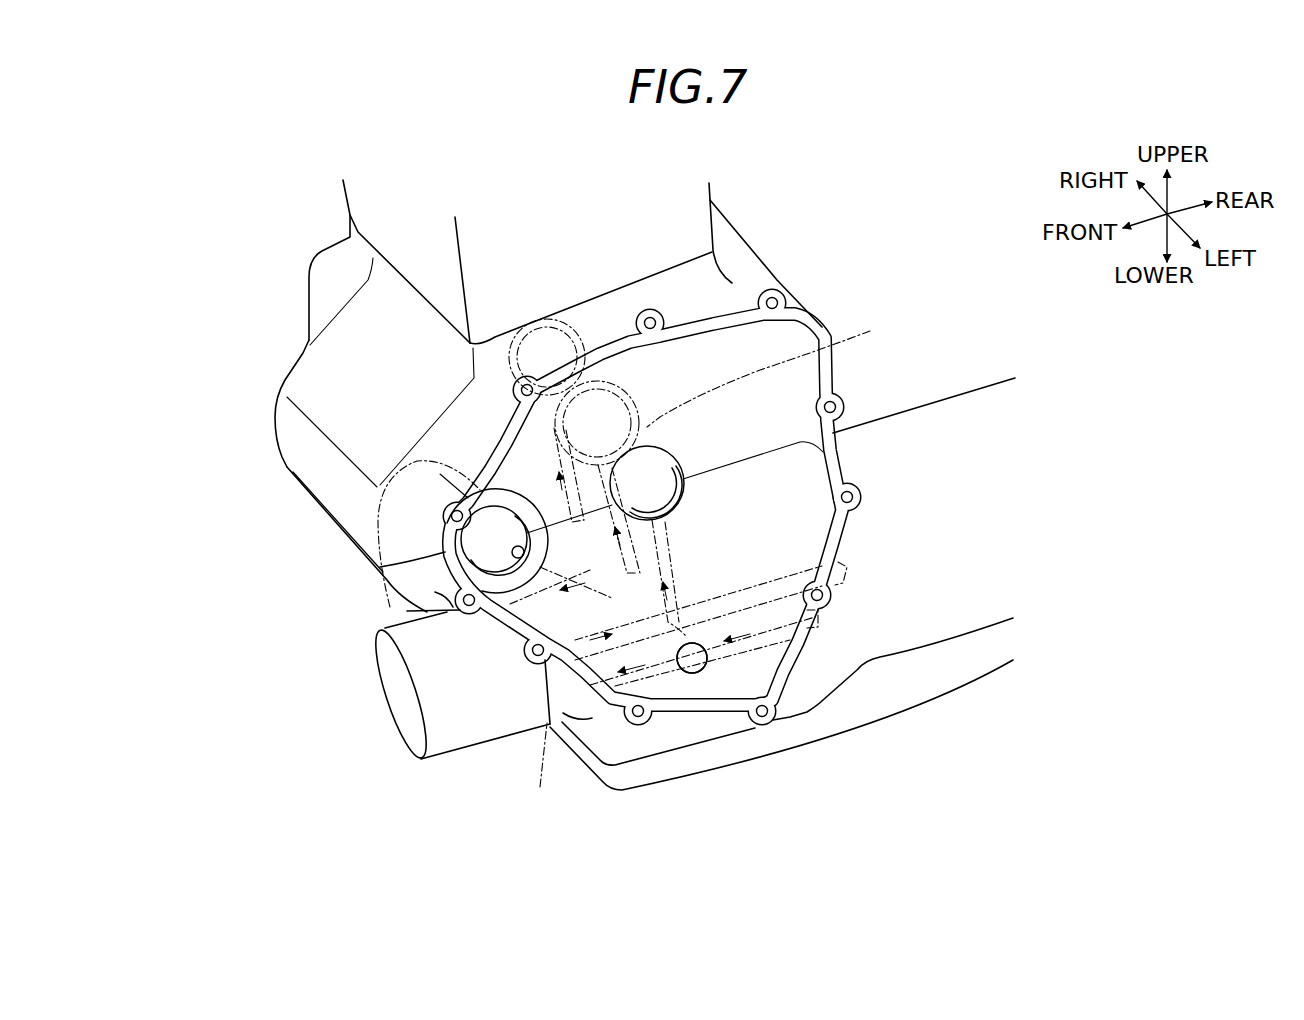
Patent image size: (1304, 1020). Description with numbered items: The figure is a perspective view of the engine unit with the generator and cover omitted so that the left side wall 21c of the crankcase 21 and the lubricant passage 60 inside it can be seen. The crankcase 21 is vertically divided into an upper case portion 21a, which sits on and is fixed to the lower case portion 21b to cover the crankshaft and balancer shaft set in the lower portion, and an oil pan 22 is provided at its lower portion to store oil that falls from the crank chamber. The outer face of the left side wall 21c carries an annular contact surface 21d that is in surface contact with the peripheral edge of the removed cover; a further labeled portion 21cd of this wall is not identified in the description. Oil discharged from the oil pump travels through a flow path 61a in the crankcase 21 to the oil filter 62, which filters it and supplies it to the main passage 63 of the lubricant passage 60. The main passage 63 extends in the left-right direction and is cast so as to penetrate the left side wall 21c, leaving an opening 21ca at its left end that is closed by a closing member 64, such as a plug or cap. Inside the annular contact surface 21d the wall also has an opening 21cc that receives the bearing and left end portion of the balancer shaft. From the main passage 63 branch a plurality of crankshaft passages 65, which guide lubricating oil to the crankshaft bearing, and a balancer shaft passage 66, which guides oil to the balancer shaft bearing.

The crankcase 21 is at (278, 380).
The upper case portion 21a is at (275, 416).
The lower case portion 21b is at (358, 563).
The left side wall 21c is at (868, 460).
The opening 21ca is at (690, 662).
The opening for the balancer shaft 21cc is at (380, 483).
The rib portion 21cd is at (870, 331).
The contact surface 21d is at (835, 378).
The oil pan 22 is at (852, 722).
The lubricant passage 60 is at (838, 592).
The flow path 61a is at (665, 630).
The oil filter 62 is at (457, 733).
The main passage 63 is at (490, 612).
The closing member 64 is at (695, 665).
The crankshaft passages 65 is at (673, 552).
The balancer shaft passage 66 is at (600, 725).